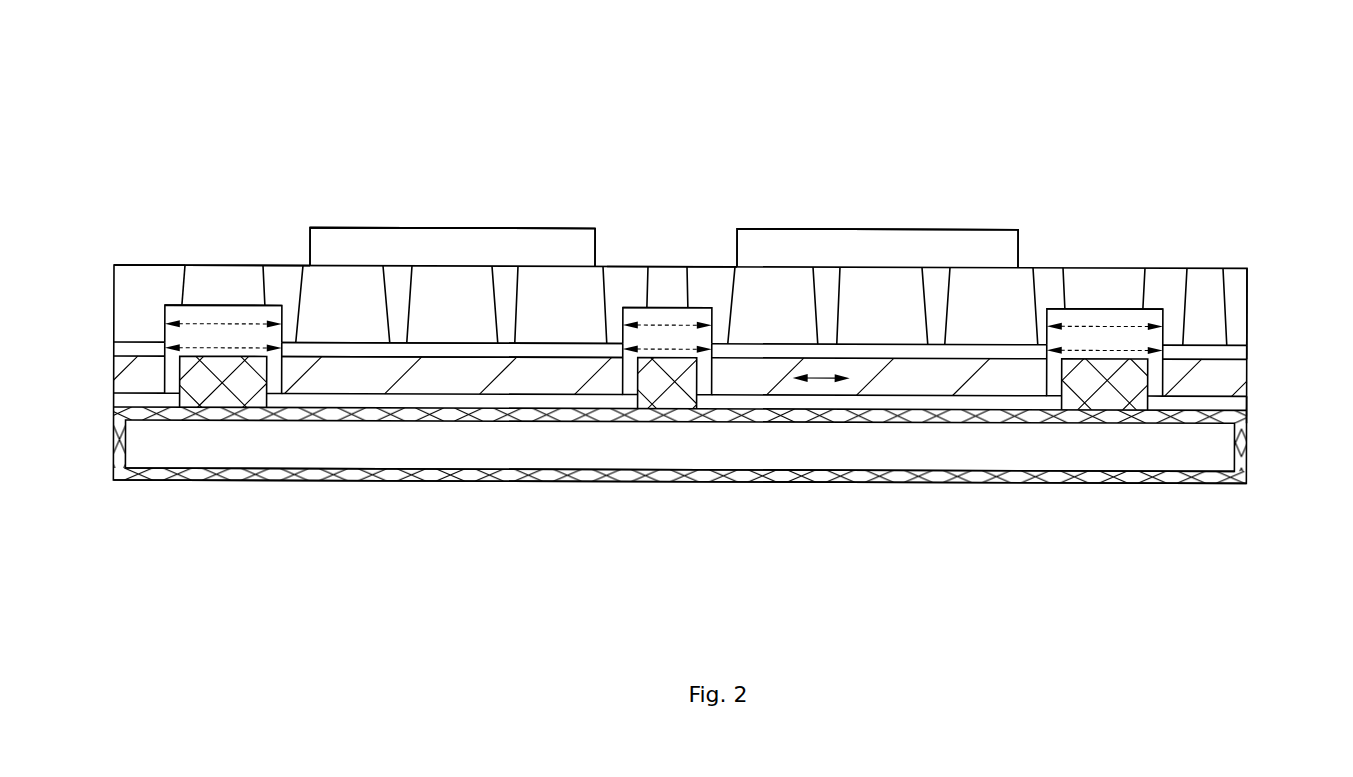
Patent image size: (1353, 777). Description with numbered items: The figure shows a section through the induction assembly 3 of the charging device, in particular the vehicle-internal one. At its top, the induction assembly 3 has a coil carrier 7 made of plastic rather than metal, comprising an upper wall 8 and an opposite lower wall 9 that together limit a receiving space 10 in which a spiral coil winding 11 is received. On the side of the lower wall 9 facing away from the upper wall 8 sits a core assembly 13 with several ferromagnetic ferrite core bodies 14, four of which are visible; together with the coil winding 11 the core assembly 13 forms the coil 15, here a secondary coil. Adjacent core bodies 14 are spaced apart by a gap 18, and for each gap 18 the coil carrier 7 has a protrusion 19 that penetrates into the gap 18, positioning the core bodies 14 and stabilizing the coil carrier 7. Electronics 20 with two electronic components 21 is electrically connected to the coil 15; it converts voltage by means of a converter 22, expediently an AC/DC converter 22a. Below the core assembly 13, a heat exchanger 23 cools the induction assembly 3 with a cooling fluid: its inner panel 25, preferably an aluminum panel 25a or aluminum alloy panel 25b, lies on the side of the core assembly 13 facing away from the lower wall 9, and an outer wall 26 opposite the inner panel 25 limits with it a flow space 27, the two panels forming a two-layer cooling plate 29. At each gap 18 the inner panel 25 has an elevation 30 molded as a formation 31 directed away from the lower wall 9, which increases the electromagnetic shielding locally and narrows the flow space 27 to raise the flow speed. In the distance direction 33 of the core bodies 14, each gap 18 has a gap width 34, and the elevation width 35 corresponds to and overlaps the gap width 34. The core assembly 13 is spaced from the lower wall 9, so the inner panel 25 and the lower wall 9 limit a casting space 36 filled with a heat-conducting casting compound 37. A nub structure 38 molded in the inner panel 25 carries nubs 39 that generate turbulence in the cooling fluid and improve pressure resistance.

The induction assembly 3 is at (1232, 140).
The coil carrier 7 is at (1083, 492).
The upper wall 8 is at (1047, 462).
The lower wall 9 is at (1092, 423).
The receiving space 10 is at (521, 451).
The coil winding 11 is at (772, 455).
The core assembly 13 is at (1254, 351).
The core body 14 is at (133, 381).
The coil 15 is at (901, 492).
The gap 18 is at (275, 380).
The protrusion 19 is at (232, 402).
The electronics 20 is at (355, 180).
The electronic component 21 is at (450, 227).
The converter 22 is at (878, 228).
The AC/DC converter 22a is at (664, 229).
The heat exchanger 23 is at (714, 256).
The inner panel 25 is at (325, 343).
The aluminum panel 25a is at (452, 342).
The aluminum alloy panel 25b is at (452, 356).
The outer wall 26 is at (158, 262).
The flow space 27 is at (149, 302).
The two-layer cooling plate 29 is at (118, 257).
The elevation 30 is at (664, 262).
The formation 31 is at (1063, 325).
The distance direction 33 is at (822, 380).
The gap width 34 is at (222, 335).
The elevation width 35 is at (222, 312).
The casting space 36 is at (1237, 350).
The casting compound 37 is at (1237, 405).
The nub structure 38 is at (769, 262).
The nub 39 is at (214, 297).